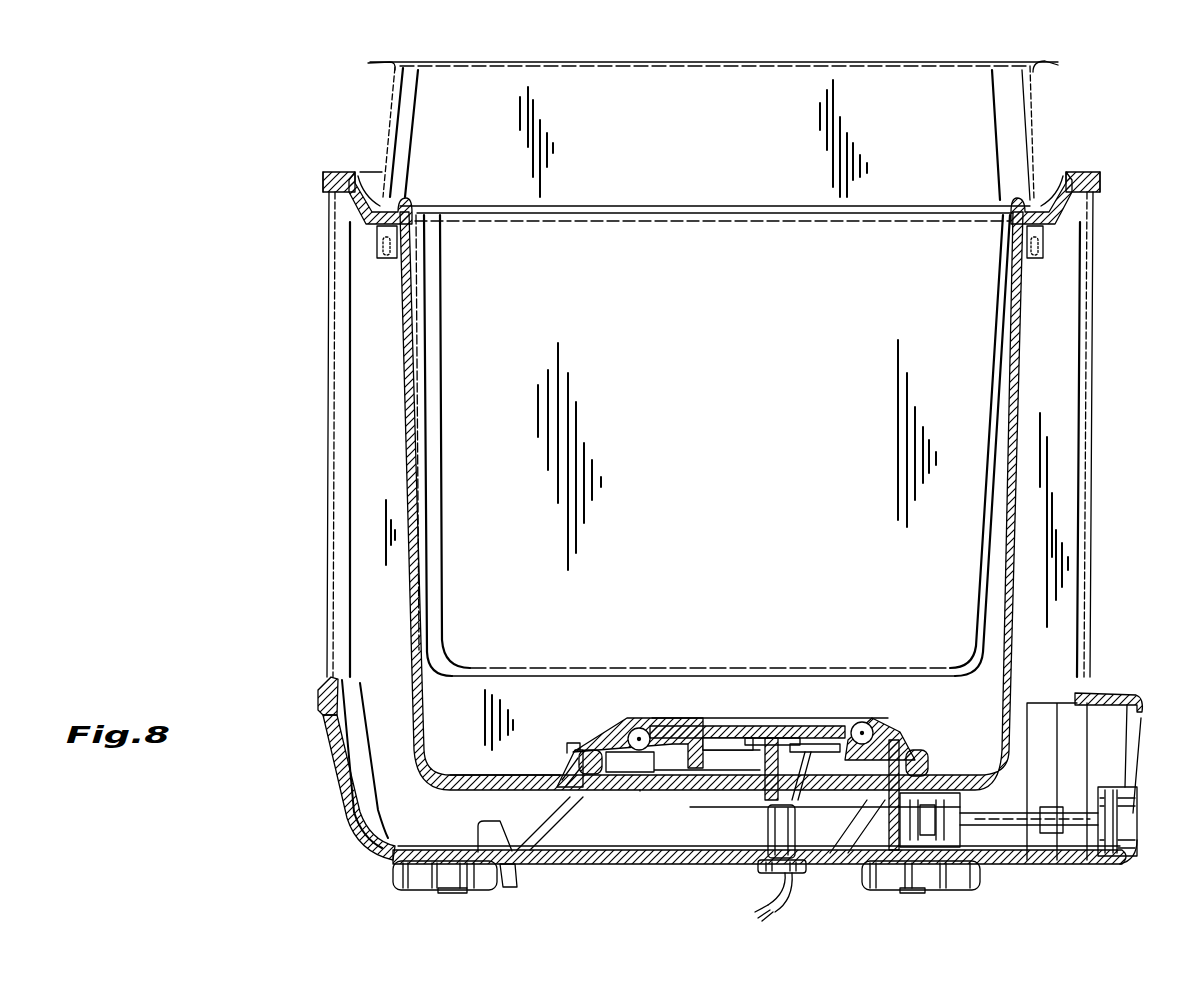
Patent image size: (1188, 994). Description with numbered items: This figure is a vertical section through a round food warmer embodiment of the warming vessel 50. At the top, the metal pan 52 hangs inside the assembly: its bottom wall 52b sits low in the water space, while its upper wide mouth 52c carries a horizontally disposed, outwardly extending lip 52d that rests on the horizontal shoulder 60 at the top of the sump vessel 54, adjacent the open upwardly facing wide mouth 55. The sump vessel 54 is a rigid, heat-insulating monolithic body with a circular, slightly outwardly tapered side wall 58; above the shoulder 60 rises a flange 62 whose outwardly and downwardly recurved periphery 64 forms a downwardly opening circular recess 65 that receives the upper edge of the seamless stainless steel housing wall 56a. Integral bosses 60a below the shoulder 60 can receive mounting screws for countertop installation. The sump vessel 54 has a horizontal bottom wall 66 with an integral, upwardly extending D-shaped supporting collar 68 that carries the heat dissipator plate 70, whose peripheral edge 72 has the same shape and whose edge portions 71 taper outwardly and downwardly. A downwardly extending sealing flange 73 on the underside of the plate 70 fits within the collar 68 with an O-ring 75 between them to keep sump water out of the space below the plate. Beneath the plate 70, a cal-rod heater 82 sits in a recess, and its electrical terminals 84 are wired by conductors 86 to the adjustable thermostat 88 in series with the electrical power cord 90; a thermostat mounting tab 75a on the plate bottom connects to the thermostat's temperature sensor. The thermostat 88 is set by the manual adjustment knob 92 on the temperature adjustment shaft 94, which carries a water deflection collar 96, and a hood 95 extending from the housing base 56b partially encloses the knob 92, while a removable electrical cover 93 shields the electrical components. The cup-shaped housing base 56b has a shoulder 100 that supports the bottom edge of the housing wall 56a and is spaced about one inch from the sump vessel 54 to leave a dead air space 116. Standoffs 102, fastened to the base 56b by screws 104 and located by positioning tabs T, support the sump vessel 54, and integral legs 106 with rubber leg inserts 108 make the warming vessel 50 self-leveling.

The warming vessel 50 is at (320, 306).
The metal pan 52 is at (388, 98).
The bottom wall 52b is at (633, 670).
The upper wide mouth 52c is at (548, 64).
The lip 52d is at (382, 60).
The sump vessel 54 is at (404, 405).
The wide mouth 55 is at (715, 441).
The housing wall 56a is at (326, 460).
The housing base 56b is at (328, 756).
The side wall 58 is at (428, 556).
The shoulder 60 is at (392, 208).
The bosses 60a is at (378, 246).
The flange 62 is at (360, 176).
The recurved periphery 64 is at (338, 172).
The recess 65 is at (323, 190).
The bottom wall 66 is at (456, 775).
The supporting collar 68 is at (560, 758).
The heat dissipator plate 70 is at (722, 716).
The tapered edge portions 71 is at (622, 735).
The peripheral edge 72 is at (573, 748).
The sealing flange 73 is at (630, 762).
The O-ring 75 is at (586, 750).
The thermostat mounting tab 75a is at (868, 788).
The cal-rod heater 82 is at (638, 728).
The electrical terminals 84 is at (764, 792).
The conductors 86 is at (809, 797).
The adjustable thermostat 88 is at (938, 800).
The electrical power cord 90 is at (765, 879).
The manual adjustment knob 92 is at (1126, 812).
The electrical cover 93 is at (1072, 853).
The temperature adjustment shaft 94 is at (997, 817).
The hood 95 is at (1116, 700).
The water deflection collar 96 is at (1062, 806).
The shoulder 100 is at (320, 684).
The standoffs 102 is at (550, 812).
The screws 104 is at (513, 868).
The legs 106 is at (1042, 879).
The rubber leg inserts 108 is at (440, 893).
The dead air space 116 is at (658, 812).
The positioning tabs T is at (478, 836).